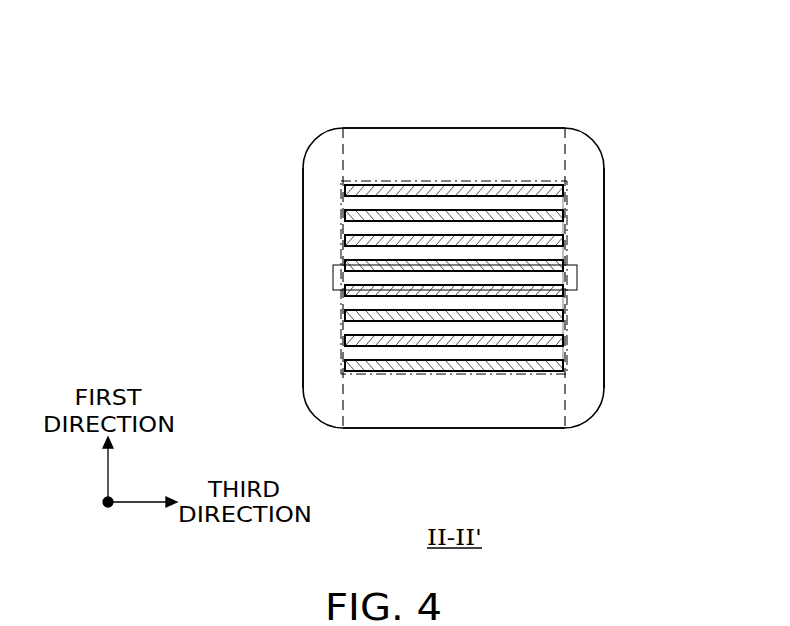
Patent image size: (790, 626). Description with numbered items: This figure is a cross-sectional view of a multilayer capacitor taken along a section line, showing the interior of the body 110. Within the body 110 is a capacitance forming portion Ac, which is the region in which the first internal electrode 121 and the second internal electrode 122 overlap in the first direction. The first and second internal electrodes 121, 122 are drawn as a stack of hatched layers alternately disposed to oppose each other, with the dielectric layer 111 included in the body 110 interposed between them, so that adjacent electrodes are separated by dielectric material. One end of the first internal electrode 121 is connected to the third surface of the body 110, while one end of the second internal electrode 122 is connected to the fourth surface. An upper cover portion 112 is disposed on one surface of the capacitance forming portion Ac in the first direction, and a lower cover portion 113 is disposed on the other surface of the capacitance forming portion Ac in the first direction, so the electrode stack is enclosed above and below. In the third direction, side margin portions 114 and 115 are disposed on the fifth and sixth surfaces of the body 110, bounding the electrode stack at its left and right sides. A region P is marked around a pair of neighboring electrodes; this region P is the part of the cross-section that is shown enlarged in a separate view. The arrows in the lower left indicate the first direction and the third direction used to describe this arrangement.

The body 110 is at (397, 128).
The dielectric layer 111 is at (382, 202).
The upper cover portion 112 is at (440, 148).
The lower cover portion 113 is at (420, 408).
The side margin portion 114 is at (315, 358).
The side margin portion 115 is at (593, 278).
The first internal electrode 121 is at (495, 190).
The second internal electrode 122 is at (518, 265).
The region P is at (330, 277).
The capacitance forming portion Ac is at (584, 362).